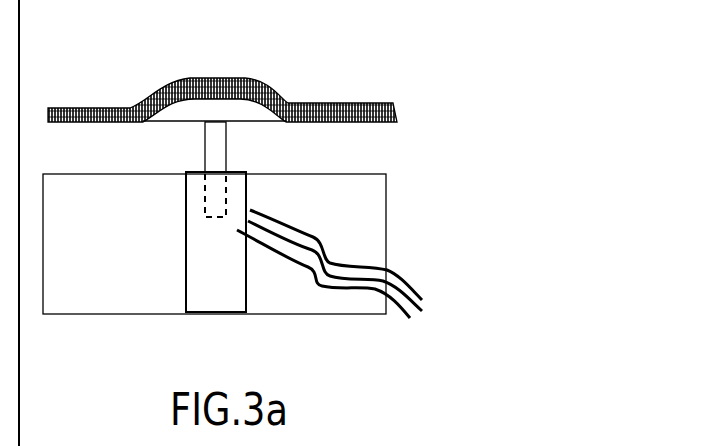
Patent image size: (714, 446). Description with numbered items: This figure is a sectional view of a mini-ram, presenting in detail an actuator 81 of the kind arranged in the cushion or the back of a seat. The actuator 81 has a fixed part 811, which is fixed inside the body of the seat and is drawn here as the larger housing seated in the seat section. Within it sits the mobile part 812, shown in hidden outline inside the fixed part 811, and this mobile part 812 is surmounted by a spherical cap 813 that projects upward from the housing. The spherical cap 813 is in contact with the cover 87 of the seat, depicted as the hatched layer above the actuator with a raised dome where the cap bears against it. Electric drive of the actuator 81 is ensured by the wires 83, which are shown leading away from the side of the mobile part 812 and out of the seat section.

The actuator 81 is at (362, 149).
The cover 87 is at (318, 104).
The fixed part 811 is at (212, 268).
The mobile part 812 is at (205, 191).
The spherical cap 813 is at (215, 124).
The wires 83 is at (355, 270).